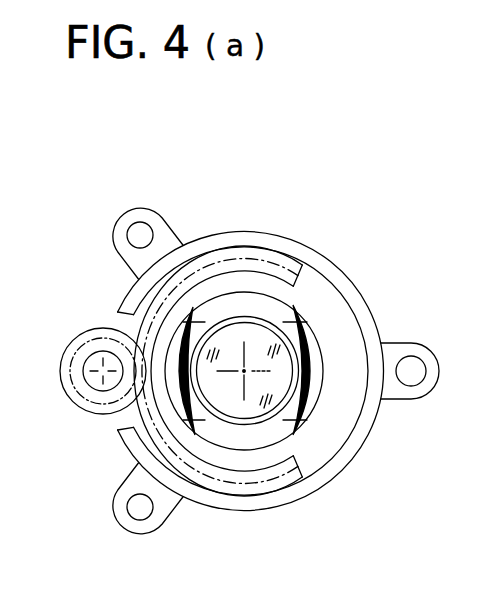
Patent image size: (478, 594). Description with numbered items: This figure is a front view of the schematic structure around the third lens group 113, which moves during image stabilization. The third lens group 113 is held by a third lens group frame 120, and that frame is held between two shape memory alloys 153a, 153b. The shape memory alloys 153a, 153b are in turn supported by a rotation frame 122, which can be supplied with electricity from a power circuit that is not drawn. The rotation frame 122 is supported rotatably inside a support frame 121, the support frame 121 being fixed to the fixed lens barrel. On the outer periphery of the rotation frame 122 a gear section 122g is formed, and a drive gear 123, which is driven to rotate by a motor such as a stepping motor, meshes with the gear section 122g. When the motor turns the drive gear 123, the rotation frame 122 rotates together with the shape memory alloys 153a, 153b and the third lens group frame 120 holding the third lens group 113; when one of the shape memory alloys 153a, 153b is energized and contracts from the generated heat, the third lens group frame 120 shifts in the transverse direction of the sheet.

The third lens group 113 is at (258, 336).
The third lens group frame 120 is at (237, 318).
The support frame 121 is at (348, 292).
The rotation frame 122 is at (307, 443).
The gear section 122g is at (212, 478).
The drive gear 123 is at (83, 350).
The shape memory alloy 153a is at (180, 324).
The shape memory alloy 153b is at (300, 318).